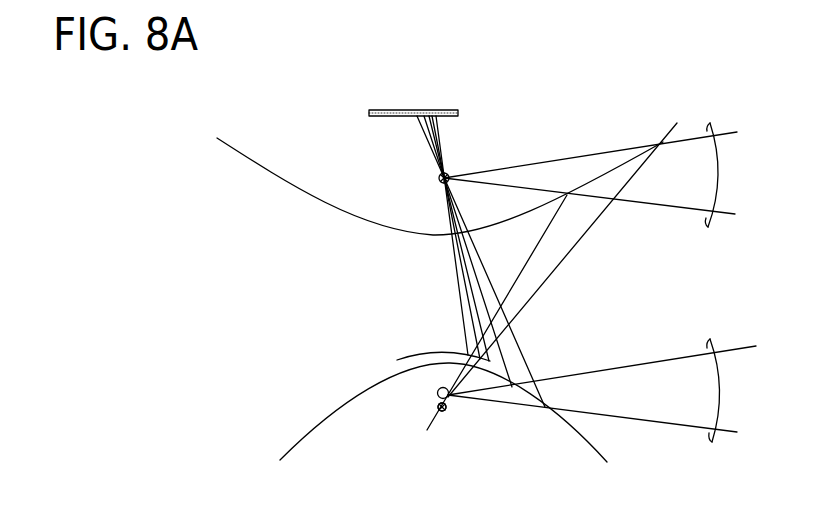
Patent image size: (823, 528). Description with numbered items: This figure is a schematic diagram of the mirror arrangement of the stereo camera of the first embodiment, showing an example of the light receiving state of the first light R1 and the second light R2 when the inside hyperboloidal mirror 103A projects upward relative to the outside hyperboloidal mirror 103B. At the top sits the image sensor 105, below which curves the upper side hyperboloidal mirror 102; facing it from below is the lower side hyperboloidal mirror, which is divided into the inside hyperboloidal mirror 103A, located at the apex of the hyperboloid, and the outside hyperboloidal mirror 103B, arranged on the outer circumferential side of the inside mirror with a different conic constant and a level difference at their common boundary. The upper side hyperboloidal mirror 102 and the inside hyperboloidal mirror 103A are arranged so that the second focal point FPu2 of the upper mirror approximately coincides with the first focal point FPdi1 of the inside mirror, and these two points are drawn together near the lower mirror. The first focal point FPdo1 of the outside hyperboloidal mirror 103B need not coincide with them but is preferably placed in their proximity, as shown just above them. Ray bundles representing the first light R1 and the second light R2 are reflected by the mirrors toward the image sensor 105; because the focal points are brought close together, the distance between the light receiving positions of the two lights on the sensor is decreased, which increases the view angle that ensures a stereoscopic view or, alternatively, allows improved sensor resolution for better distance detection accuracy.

The upper side hyperboloidal mirror 102 is at (297, 180).
The inside hyperboloidal mirror 103A is at (407, 362).
The outside hyperboloidal mirror 103B is at (303, 433).
The image sensor 105 is at (432, 110).
The first light R1 is at (710, 124).
The second light R2 is at (708, 342).
The first focal point of the outside hyperboloidal mirror FPdo1 is at (437, 392).
The second focal point of the upper side hyperboloidal mirror FPu2 is at (446, 410).
The first focal point of the inside hyperboloidal mirror FPdi1 is at (481, 449).